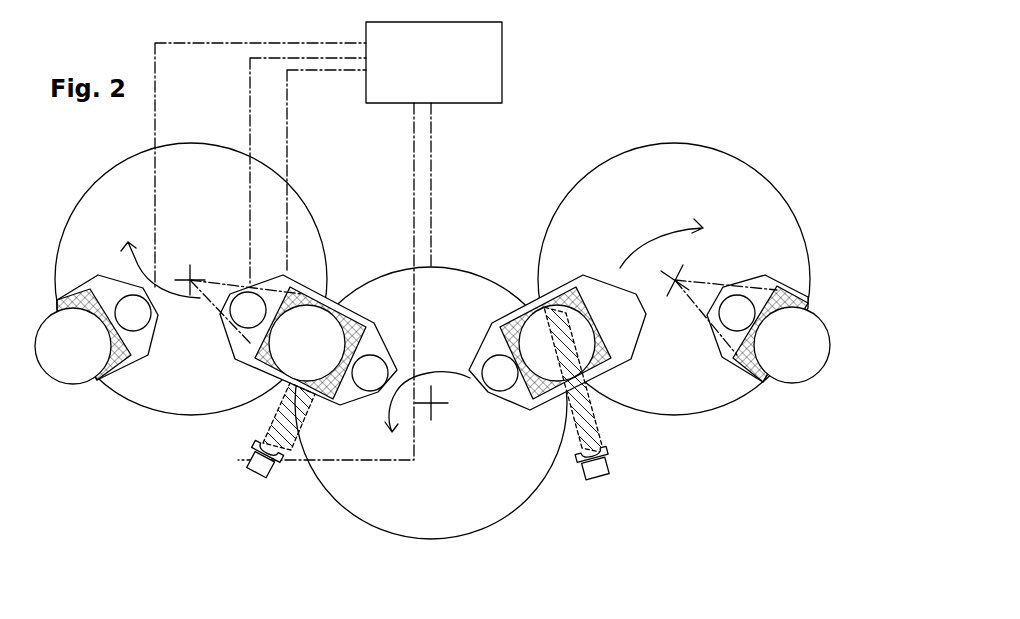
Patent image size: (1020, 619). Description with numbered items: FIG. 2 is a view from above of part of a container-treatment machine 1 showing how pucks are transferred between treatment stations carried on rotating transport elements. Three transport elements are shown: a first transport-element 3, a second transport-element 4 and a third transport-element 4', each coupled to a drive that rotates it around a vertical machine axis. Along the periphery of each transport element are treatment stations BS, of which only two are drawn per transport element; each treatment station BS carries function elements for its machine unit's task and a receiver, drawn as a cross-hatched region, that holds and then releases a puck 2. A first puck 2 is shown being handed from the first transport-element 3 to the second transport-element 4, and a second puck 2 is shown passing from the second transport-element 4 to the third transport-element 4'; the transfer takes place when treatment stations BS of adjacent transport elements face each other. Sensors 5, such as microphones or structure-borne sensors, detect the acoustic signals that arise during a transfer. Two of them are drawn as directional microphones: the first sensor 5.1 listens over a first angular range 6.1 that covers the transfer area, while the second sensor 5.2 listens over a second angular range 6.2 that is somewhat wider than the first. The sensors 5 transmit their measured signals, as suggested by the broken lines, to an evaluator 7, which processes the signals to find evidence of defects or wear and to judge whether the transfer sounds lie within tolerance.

The container-treatment machine 1 is at (461, 305).
The puck 2 is at (328, 333).
The first transport-element 3 is at (152, 196).
The second transport-element 4 is at (431, 403).
The third transport-element 4' is at (674, 279).
The sensor 5 is at (425, 408).
The first sensor 5.1 is at (247, 477).
The second sensor 5.2 is at (591, 476).
The first angular range 6.1 is at (251, 446).
The second angular range 6.2 is at (608, 422).
The evaluator 7 is at (442, 72).
The treatment station BS is at (92, 378).